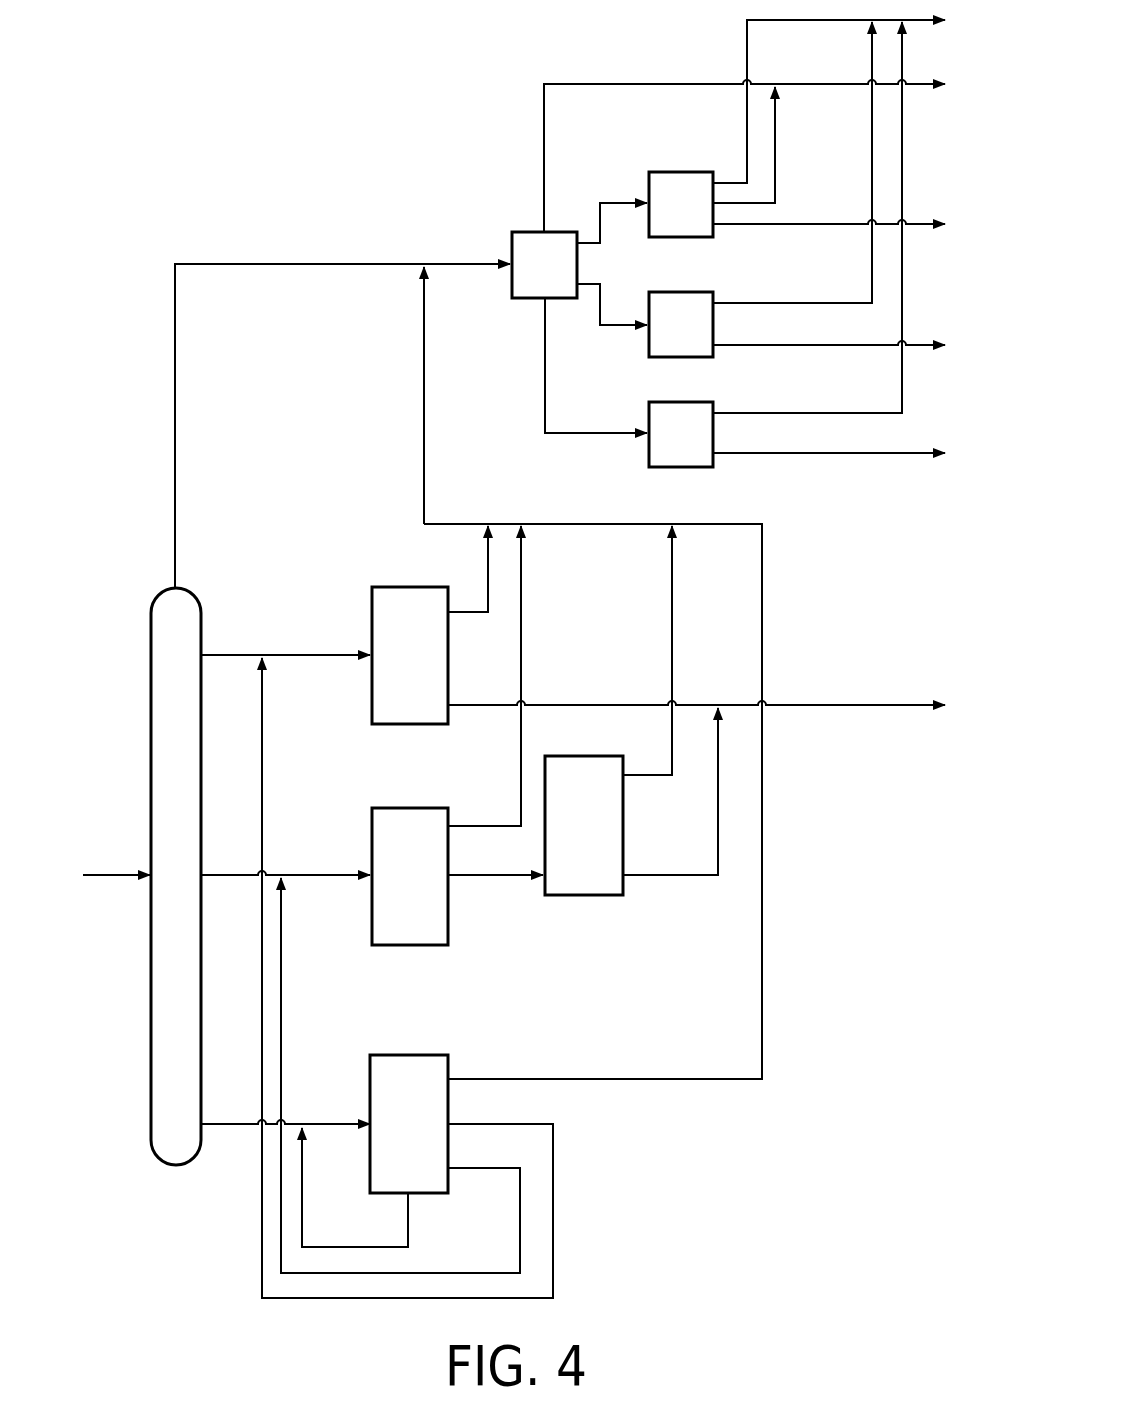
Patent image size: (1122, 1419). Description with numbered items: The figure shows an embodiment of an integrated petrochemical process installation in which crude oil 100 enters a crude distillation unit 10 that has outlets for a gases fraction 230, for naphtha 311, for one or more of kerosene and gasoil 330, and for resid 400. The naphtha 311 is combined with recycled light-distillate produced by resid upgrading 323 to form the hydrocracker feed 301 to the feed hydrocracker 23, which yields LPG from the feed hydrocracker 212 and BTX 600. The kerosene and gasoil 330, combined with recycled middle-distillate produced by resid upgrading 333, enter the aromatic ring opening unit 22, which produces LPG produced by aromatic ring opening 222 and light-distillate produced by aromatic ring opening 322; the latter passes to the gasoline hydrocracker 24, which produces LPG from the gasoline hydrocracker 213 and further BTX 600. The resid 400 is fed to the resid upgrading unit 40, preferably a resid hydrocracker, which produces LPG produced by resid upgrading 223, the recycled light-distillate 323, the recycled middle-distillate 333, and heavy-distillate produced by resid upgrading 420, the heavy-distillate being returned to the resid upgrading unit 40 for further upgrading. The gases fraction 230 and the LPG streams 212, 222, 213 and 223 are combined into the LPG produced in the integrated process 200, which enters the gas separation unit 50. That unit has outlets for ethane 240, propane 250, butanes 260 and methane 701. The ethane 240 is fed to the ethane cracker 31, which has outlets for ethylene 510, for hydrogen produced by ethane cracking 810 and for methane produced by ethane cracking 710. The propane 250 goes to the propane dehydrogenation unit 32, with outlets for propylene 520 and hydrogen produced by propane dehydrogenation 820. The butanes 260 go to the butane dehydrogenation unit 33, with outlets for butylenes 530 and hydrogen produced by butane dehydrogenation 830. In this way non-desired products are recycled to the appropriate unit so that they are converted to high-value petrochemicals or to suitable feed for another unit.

The crude distillation unit 10 is at (176, 876).
The crude oil 100 is at (103, 875).
The aromatic ring opening unit 22 is at (410, 876).
The feed hydrocracker 23 is at (410, 655).
The gasoline hydrocracker 24 is at (584, 825).
The resid upgrading unit 40 is at (409, 1124).
The gas separation unit 50 is at (544, 265).
The ethane cracker 31 is at (681, 204).
The propane dehydrogenation unit 32 is at (681, 324).
The butane dehydrogenation unit 33 is at (681, 434).
The LPG produced in the integrated process 200 is at (457, 264).
The gases fraction by crude oil distillation 230 is at (175, 337).
The LPG from feed hydrocracker 212 is at (475, 612).
The LPG produced by aromatic ring opening 222 is at (475, 826).
The LPG from gasoline hydrocracker 213 is at (650, 775).
The LPG produced by resid upgrading 223 is at (475, 1079).
The ethane 240 is at (617, 203).
The propane 250 is at (617, 325).
The butanes 260 is at (617, 433).
The hydrocracker feed 301 is at (325, 655).
The naphtha produced by crude oil distillation 311 is at (228, 655).
The light-distillate produced by aromatic ring opening 322 is at (475, 875).
The light-distillate produced by resid upgrading 323 is at (530, 1124).
The kerosene and gasoil produced by crude oil distillation 330 is at (228, 875).
The middle-distillate produced by resid upgrading 333 is at (475, 1168).
The resid 400 is at (228, 1124).
The heavy-distillate produced by resid upgrading 420 is at (302, 1224).
The ethylene produced by ethane cracking 510 is at (840, 224).
The propylene produced by propane dehydrogenation 520 is at (785, 345).
The C4 olefins produced by butane dehydrogenation 530 is at (840, 453).
The BTX 600 is at (840, 705).
The methane produced by gas separation 701 is at (617, 84).
The methane produced by ethane cracking 710 is at (777, 117).
The hydrogen produced by ethane cracking 810 is at (747, 117).
The hydrogen produced by propane dehydrogenation 820 is at (785, 303).
The hydrogen produced by butane dehydrogenation 830 is at (840, 413).